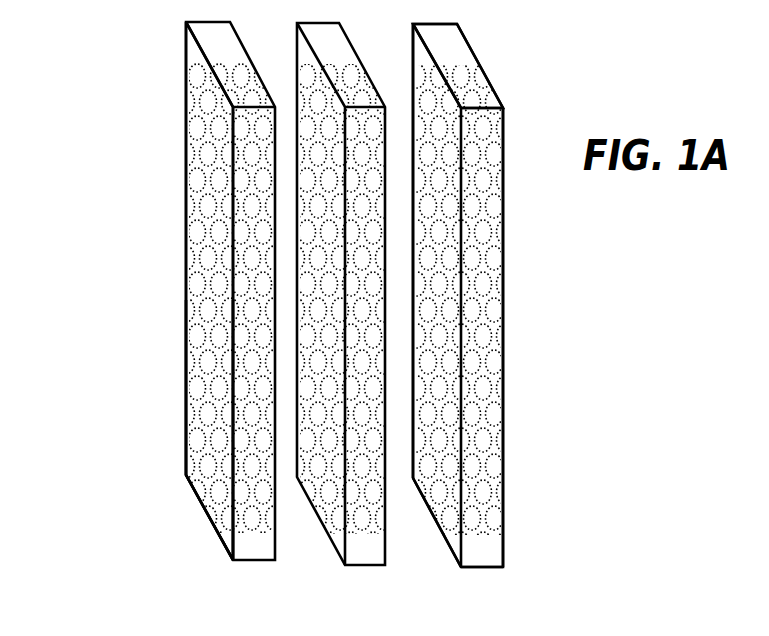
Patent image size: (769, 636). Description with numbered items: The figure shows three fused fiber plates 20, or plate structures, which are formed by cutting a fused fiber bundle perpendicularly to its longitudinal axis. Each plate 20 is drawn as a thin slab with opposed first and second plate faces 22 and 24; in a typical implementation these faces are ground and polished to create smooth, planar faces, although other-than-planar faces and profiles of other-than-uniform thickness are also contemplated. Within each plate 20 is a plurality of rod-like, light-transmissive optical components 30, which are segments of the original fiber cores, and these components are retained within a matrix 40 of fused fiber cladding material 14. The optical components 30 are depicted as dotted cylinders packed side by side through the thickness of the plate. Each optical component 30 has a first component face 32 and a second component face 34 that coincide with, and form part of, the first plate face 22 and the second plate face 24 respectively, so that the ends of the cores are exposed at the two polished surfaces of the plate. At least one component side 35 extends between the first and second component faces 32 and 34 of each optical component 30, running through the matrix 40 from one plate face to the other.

The fused fiber plate 20 is at (253, 203).
The first plate face 22 is at (417, 66).
The second plate face 24 is at (489, 79).
The optical component 30 is at (188, 215).
The first component face 32 is at (442, 528).
The second component face 34 is at (497, 518).
The component side 35 is at (482, 538).
The matrix 40 is at (187, 343).
The cladding material 14 is at (127, 323).